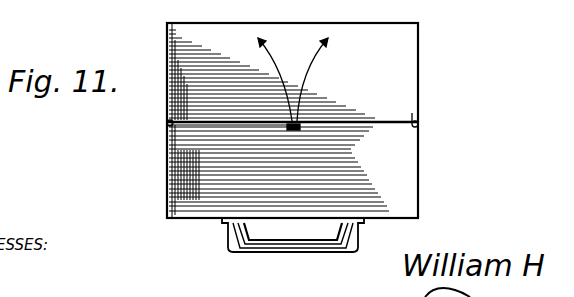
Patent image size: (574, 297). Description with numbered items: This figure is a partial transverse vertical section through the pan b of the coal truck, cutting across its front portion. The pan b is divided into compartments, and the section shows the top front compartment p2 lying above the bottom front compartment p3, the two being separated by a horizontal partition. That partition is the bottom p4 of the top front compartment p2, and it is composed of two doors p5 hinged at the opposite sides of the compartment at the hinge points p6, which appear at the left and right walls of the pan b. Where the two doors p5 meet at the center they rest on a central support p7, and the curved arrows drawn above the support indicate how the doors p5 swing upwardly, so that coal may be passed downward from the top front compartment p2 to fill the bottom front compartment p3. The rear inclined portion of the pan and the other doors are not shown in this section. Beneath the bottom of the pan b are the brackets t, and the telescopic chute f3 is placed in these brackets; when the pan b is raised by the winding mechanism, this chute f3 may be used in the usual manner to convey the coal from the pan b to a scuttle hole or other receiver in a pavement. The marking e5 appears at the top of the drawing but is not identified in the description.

The pan b is at (420, 28).
The top front compartment p2 is at (281, 75).
The bottom front compartment p3 is at (282, 170).
The bottom p4 is at (398, 118).
The doors p5 is at (210, 123).
The hinges p6 is at (167, 125).
The central support p7 is at (294, 131).
The pipe e5 is at (323, 8).
The brackets t is at (360, 236).
The telescopic chute f3 is at (262, 242).